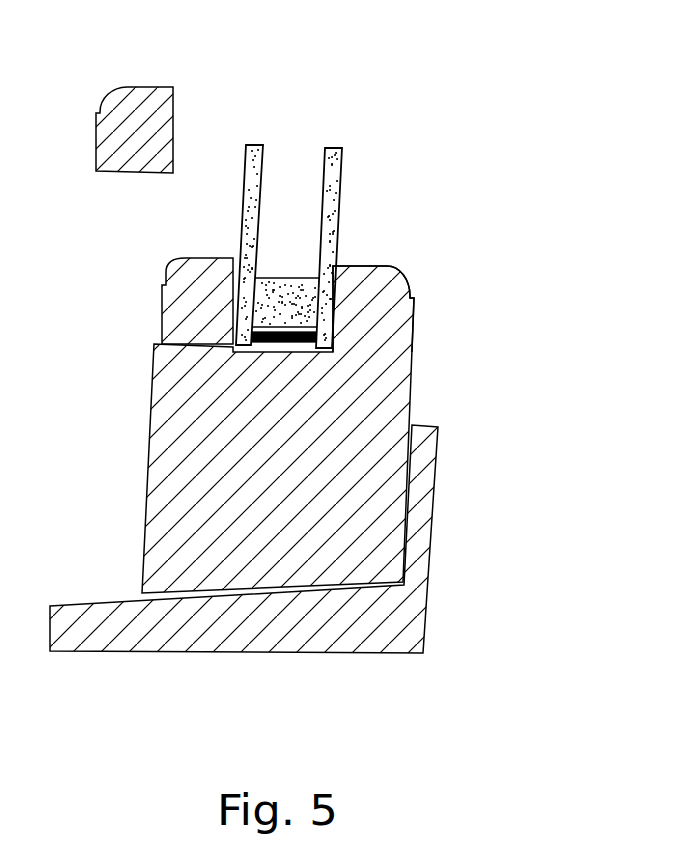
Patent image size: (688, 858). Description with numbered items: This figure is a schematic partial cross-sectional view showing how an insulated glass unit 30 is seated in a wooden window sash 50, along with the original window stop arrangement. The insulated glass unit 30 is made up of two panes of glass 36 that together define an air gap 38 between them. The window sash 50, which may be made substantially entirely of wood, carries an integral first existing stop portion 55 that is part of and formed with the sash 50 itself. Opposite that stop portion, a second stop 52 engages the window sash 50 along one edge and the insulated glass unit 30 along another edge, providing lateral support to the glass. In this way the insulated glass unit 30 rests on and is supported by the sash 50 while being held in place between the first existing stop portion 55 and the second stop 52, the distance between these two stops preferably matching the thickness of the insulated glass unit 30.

The insulated glass unit 30 is at (346, 207).
The panes of glass 36 is at (254, 144).
The air gap 38 is at (293, 150).
The window sash 50 is at (318, 521).
The second stop 52 is at (199, 272).
The first existing stop portion 55 is at (407, 292).